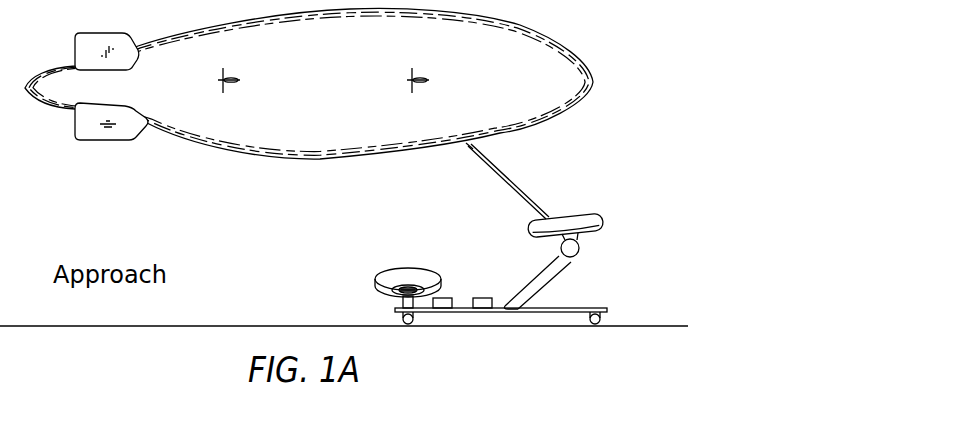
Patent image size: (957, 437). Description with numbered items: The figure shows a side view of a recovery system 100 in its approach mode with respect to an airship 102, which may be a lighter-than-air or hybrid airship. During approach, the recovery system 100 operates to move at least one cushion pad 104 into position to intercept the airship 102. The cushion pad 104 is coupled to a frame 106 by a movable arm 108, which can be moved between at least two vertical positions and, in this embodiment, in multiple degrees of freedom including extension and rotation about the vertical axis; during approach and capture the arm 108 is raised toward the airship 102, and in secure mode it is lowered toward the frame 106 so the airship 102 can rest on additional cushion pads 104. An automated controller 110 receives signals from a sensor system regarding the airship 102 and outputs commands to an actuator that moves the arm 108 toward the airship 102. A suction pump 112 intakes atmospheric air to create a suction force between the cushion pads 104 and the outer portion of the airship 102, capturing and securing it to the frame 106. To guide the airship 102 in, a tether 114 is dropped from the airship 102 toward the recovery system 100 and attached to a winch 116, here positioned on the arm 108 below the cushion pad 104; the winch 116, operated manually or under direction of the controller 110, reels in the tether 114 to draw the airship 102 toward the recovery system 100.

The recovery system 100 is at (458, 242).
The airship 102 is at (484, 31).
The cushion pad 104 is at (590, 221).
The frame 106 is at (541, 312).
The movable arm 108 is at (541, 288).
The automated controller 110 is at (483, 309).
The suction pump 112 is at (440, 309).
The tether 114 is at (514, 186).
The winch 116 is at (579, 248).